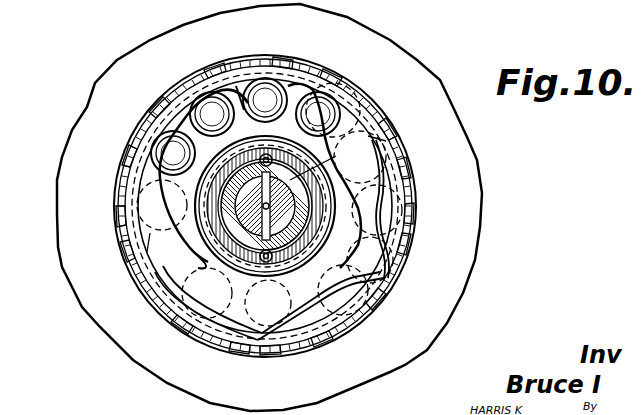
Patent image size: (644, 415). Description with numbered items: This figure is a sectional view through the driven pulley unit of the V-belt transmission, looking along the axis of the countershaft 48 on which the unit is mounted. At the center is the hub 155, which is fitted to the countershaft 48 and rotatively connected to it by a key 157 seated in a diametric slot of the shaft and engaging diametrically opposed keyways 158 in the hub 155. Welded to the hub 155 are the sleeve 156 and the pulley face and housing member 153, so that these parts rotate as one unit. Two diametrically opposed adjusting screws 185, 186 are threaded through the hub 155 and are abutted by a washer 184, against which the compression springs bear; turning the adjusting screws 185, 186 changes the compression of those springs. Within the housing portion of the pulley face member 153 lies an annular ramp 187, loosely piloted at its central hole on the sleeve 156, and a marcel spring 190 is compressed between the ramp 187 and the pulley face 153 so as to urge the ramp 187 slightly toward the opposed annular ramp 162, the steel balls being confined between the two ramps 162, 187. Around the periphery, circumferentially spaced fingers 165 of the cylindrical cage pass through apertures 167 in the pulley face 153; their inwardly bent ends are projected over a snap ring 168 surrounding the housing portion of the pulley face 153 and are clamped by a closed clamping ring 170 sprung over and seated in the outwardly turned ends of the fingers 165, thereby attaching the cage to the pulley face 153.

The countershaft 48 is at (176, 253).
The pulley face and housing member 153 is at (483, 174).
The hub 155 is at (250, 200).
The sleeve 156 is at (178, 108).
The key 157 is at (268, 270).
The keyways 158 is at (330, 176).
The annular ramp 162 is at (237, 87).
The fingers 165 is at (340, 80).
The apertures 167 is at (283, 62).
The snap ring 168 is at (410, 250).
The clamping ring 170 is at (380, 303).
The washer 184 is at (212, 298).
The adjusting screw 185 is at (267, 154).
The adjusting screw 186 is at (266, 263).
The annular ramp 187 is at (152, 200).
The marcel spring 190 is at (315, 312).